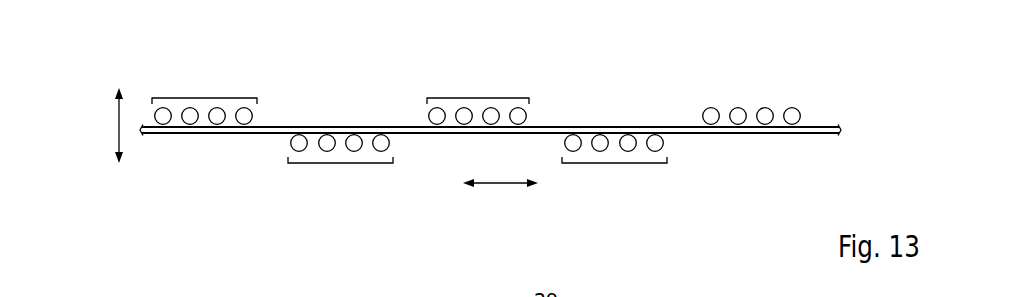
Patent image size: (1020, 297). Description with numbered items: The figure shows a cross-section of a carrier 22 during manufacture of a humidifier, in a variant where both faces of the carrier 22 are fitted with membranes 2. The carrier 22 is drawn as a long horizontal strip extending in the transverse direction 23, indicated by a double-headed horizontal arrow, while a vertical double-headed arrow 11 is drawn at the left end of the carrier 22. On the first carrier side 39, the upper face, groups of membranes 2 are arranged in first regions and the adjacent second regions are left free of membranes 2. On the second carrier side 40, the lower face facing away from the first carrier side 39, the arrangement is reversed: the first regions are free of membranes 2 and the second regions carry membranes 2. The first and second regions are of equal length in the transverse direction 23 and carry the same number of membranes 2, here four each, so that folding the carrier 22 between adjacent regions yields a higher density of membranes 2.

The membrane 2 is at (190, 118).
The vertical adjustment direction 11 is at (119, 122).
The carrier 22 is at (740, 145).
The transverse direction 23 is at (500, 183).
The first carrier side 39 is at (336, 127).
The second carrier side 40 is at (430, 133).